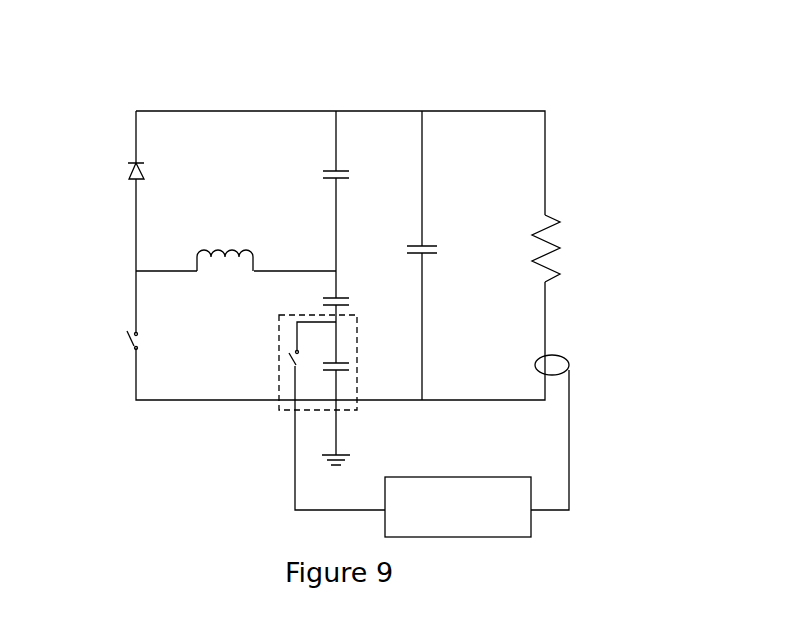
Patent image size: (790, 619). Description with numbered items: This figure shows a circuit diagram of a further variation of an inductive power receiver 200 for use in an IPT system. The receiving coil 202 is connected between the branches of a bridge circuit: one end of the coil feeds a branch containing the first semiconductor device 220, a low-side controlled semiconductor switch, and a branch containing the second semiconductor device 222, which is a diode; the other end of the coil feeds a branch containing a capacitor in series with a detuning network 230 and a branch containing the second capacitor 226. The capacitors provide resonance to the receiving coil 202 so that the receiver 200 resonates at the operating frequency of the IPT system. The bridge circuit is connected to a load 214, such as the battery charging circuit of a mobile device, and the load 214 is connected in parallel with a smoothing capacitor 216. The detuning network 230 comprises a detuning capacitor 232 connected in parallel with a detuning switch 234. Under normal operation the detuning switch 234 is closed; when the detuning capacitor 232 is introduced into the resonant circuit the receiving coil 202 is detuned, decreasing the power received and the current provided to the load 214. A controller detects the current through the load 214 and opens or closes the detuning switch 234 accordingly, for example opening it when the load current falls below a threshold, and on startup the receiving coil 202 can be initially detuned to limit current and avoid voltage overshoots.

The inductive power receiver 200 is at (597, 102).
The receiving coil 202 is at (226, 247).
The load 214 is at (557, 245).
The smoothing capacitor 216 is at (425, 246).
The first semiconductor device 220 is at (130, 343).
The second semiconductor device 222 is at (132, 173).
The second capacitor 226 is at (323, 171).
The detuning network 230 is at (302, 410).
The detuning capacitor 232 is at (349, 371).
The detuning switch 234 is at (296, 363).